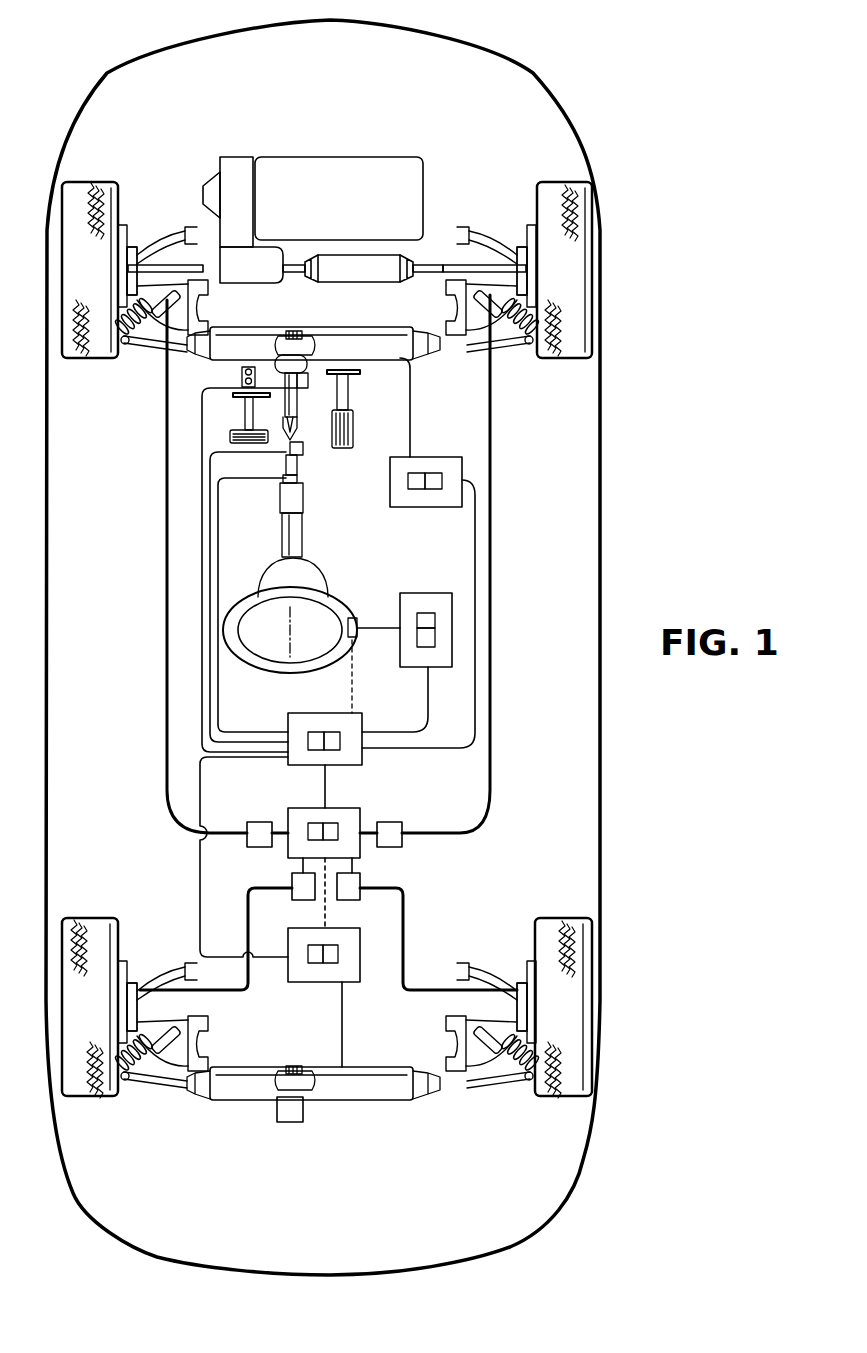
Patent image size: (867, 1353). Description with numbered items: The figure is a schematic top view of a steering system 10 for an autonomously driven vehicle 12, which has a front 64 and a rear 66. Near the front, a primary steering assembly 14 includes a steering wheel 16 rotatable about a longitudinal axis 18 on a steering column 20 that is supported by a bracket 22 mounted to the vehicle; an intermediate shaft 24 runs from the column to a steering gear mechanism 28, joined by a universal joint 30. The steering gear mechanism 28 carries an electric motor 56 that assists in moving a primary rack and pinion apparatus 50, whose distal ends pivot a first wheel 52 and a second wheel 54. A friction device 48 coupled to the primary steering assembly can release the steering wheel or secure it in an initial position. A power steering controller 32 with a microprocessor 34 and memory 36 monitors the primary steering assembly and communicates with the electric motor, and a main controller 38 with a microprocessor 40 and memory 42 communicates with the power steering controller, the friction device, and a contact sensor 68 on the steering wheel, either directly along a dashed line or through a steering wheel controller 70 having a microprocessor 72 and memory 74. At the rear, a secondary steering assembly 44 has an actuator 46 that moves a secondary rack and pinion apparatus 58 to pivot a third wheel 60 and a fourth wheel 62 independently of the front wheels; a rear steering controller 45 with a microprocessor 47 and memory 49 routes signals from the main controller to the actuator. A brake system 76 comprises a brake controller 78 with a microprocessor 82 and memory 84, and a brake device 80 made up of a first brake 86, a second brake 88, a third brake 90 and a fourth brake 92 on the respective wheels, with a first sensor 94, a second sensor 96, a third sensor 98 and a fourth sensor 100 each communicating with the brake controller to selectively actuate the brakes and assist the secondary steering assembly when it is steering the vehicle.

The steering system 10 is at (678, 92).
The autonomously driven vehicle 12 is at (600, 490).
The primary steering assembly 14 is at (325, 543).
The steering wheel 16 is at (268, 667).
The longitudinal axis 18 is at (265, 646).
The steering column 20 is at (280, 530).
The bracket 22 is at (302, 498).
The intermediate shaft 24 is at (287, 463).
The steering gear mechanism 28 is at (275, 359).
The universal joint 30 is at (296, 424).
The power steering controller 32 is at (427, 470).
The microprocessor 34 is at (418, 488).
The memory 36 is at (437, 488).
The main controller 38 is at (345, 757).
The microprocessor 40 is at (313, 748).
The memory 42 is at (330, 748).
The secondary steering assembly 44 is at (311, 1082).
The rear steering controller 45 is at (366, 975).
The actuator 46 is at (283, 1122).
The microprocessor 47 is at (317, 962).
The friction device 48 is at (306, 386).
The memory 49 is at (343, 962).
The primary rack and pinion apparatus 50 is at (313, 331).
The first wheel 52 is at (78, 187).
The second wheel 54 is at (553, 188).
The electric motor 56 is at (303, 343).
The secondary rack and pinion apparatus 58 is at (286, 1060).
The third wheel 60 is at (77, 1088).
The fourth wheel 62 is at (572, 1075).
The front 64 is at (490, 45).
The rear 66 is at (510, 1247).
The contact sensor 68 is at (355, 617).
The steering wheel controller 70 is at (473, 635).
The microprocessor 72 is at (428, 623).
The memory 74 is at (428, 642).
The brake system 76 is at (136, 360).
The brake controller 78 is at (367, 832).
The brake device 80 is at (145, 196).
The microprocessor 82 is at (320, 826).
The memory 84 is at (338, 836).
The first brake 86 is at (132, 247).
The second brake 88 is at (522, 250).
The third brake 90 is at (133, 993).
The fourth brake 92 is at (540, 1090).
The first sensor 94 is at (250, 826).
The second sensor 96 is at (398, 838).
The third sensor 98 is at (292, 887).
The fourth sensor 100 is at (343, 900).